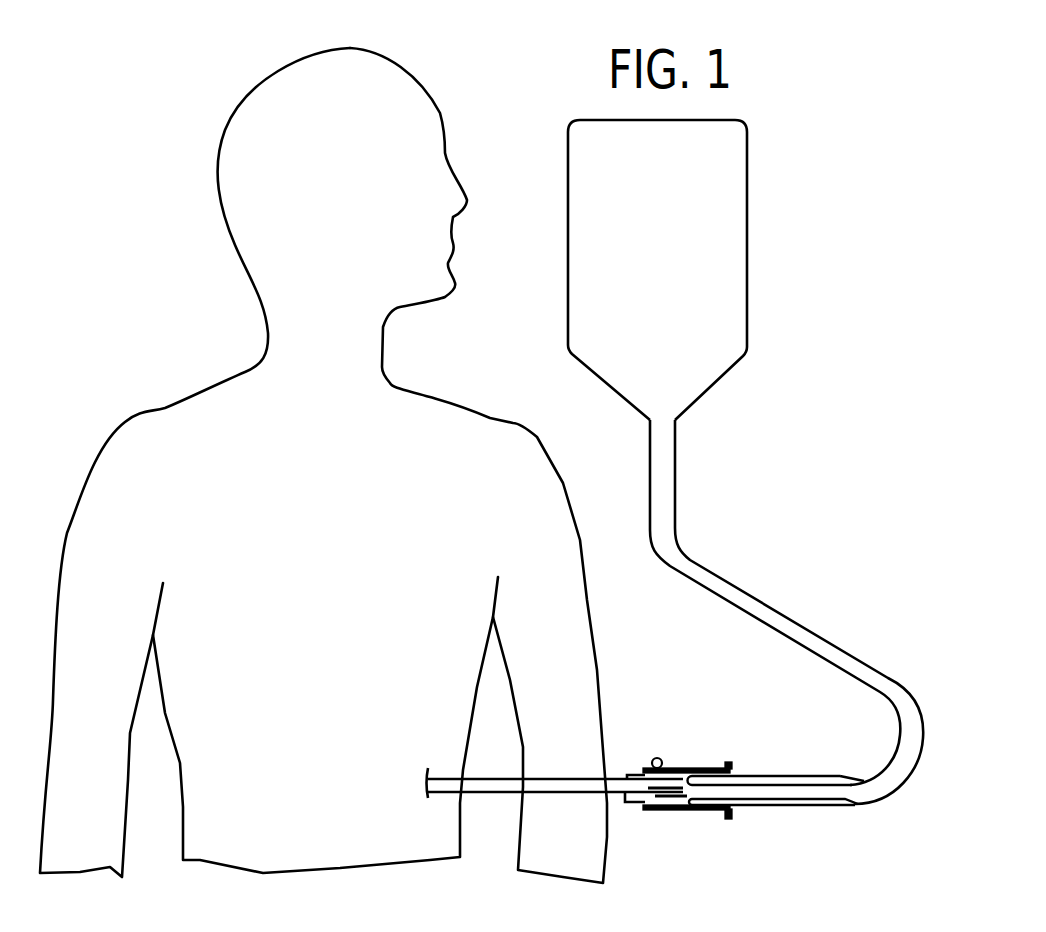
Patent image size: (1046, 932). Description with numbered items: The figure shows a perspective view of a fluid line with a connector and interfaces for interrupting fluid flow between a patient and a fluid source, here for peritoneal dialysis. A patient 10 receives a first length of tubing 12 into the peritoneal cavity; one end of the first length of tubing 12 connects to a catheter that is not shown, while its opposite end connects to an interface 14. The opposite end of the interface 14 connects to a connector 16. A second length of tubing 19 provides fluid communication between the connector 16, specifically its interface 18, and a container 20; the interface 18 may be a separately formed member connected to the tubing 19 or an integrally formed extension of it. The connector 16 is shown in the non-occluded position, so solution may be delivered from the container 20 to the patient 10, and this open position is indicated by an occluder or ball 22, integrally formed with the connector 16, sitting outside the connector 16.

The patient 10 is at (501, 406).
The first length of tubing 12 is at (485, 788).
The interface 14 is at (626, 778).
The connector 16 is at (710, 770).
The interface 18 is at (753, 779).
The second length of tubing 19 is at (783, 623).
The container 20 is at (733, 262).
The occluder or ball 22 is at (657, 758).